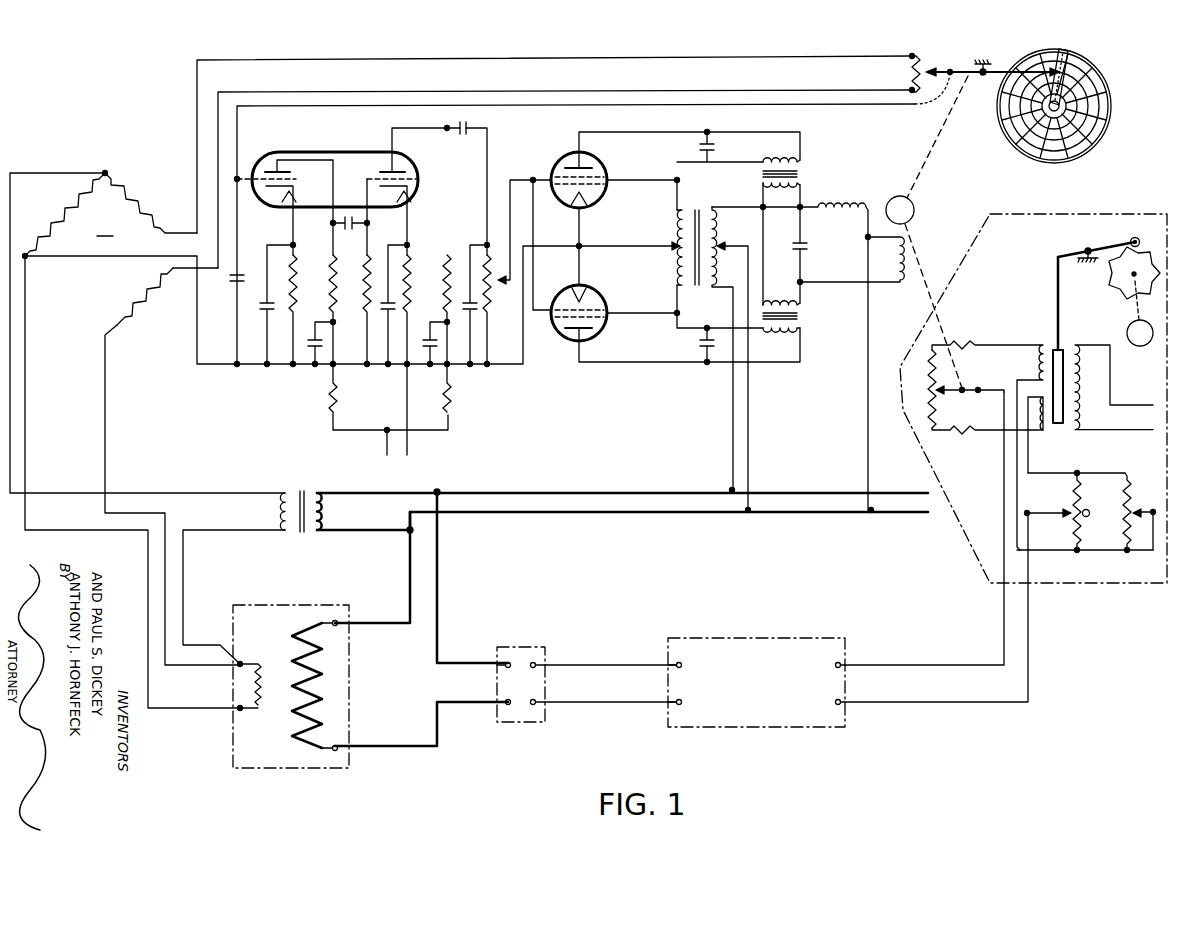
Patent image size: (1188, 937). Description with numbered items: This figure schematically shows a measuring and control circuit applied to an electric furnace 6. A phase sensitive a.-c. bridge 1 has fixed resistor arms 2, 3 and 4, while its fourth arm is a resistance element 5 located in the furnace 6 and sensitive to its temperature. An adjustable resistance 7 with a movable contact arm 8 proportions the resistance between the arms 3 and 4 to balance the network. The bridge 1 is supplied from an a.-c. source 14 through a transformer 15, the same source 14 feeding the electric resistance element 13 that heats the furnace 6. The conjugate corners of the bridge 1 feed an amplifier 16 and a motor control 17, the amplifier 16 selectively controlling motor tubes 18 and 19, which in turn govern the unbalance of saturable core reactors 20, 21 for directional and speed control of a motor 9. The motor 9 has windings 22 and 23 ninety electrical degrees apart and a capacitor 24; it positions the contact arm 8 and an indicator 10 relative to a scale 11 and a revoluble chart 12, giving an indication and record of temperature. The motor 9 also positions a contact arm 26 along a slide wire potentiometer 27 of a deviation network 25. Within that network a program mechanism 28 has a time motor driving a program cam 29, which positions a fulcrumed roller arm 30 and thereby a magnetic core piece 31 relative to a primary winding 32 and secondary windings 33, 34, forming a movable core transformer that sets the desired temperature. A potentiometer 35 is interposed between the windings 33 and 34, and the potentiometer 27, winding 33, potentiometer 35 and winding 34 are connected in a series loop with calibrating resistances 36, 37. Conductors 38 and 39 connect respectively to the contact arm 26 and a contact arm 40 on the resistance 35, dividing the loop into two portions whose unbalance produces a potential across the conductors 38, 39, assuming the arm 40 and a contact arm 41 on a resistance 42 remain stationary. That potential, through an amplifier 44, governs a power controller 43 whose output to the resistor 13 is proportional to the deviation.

The phase sensitive a.-c. bridge 1 is at (105, 225).
The fixed resistor arm 2 is at (65, 214).
The fixed resistor arm 3 is at (151, 203).
The fixed resistor arm 4 is at (145, 296).
The resistance element 5 is at (256, 686).
The electric furnace 6 is at (280, 606).
The adjustable resistance 7 is at (908, 74).
The movable contact arm 8 is at (940, 70).
The motor 9 is at (915, 207).
The indicator 10 is at (990, 78).
The scale 11 is at (1073, 62).
The revoluble chart 12 is at (1097, 140).
The electric resistance element 13 is at (319, 686).
The a.-c. source 14 is at (548, 512).
The transformer 15 is at (300, 501).
The amplifier 16 is at (390, 291).
The motor control 17 is at (718, 310).
The motor tube 18 is at (570, 342).
The motor tube 19 is at (563, 153).
The saturable core reactor 20 is at (794, 317).
The saturable core reactor 21 is at (794, 172).
The winding 22 is at (835, 207).
The winding 23 is at (852, 259).
The capacitor 24 is at (810, 246).
The deviation network 25 is at (1033, 430).
The contact arm 26 is at (958, 392).
The slide wire potentiometer 27 is at (919, 389).
The program mechanism 28 is at (1094, 288).
The program cam 29 is at (1123, 300).
The fulcrumed roller arm 30 is at (1115, 238).
The magnetic core piece 31 is at (1056, 347).
The primary winding 32 is at (1115, 387).
The secondary winding 33 is at (1029, 447).
The secondary winding 34 is at (1035, 420).
The potentiometer 35 is at (1070, 497).
The calibrating resistance 36 is at (986, 336).
The calibrating resistance 37 is at (987, 441).
The conductor 38 is at (923, 662).
The conductor 39 is at (923, 702).
The contact arm 40 is at (1040, 516).
The contact arm 41 is at (1143, 508).
The resistance 42 is at (1085, 513).
The power controller 43 is at (516, 706).
The amplifier 44 is at (756, 682).